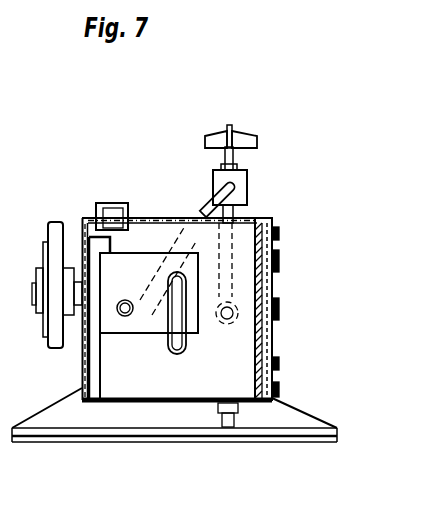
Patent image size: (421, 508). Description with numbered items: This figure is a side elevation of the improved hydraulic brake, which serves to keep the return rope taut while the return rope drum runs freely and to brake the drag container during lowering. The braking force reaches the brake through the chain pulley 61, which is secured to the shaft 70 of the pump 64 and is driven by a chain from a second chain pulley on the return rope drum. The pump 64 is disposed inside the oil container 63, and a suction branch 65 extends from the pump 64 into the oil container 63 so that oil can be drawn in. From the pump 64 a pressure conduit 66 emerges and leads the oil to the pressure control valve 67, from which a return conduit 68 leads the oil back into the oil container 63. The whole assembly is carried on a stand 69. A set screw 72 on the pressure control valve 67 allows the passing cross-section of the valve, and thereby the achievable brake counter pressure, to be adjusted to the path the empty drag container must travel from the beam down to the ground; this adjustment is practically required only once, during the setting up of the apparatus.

The chain pulley 61 is at (50, 222).
The oil container 63 is at (225, 367).
The pump 64 is at (148, 323).
The suction branch 65 is at (179, 354).
The pressure conduit 66 is at (183, 222).
The pressure control valve 67 is at (238, 190).
The return conduit 68 is at (234, 220).
The stand 69 is at (287, 418).
The shaft 70 is at (80, 222).
The set screw 72 is at (245, 131).